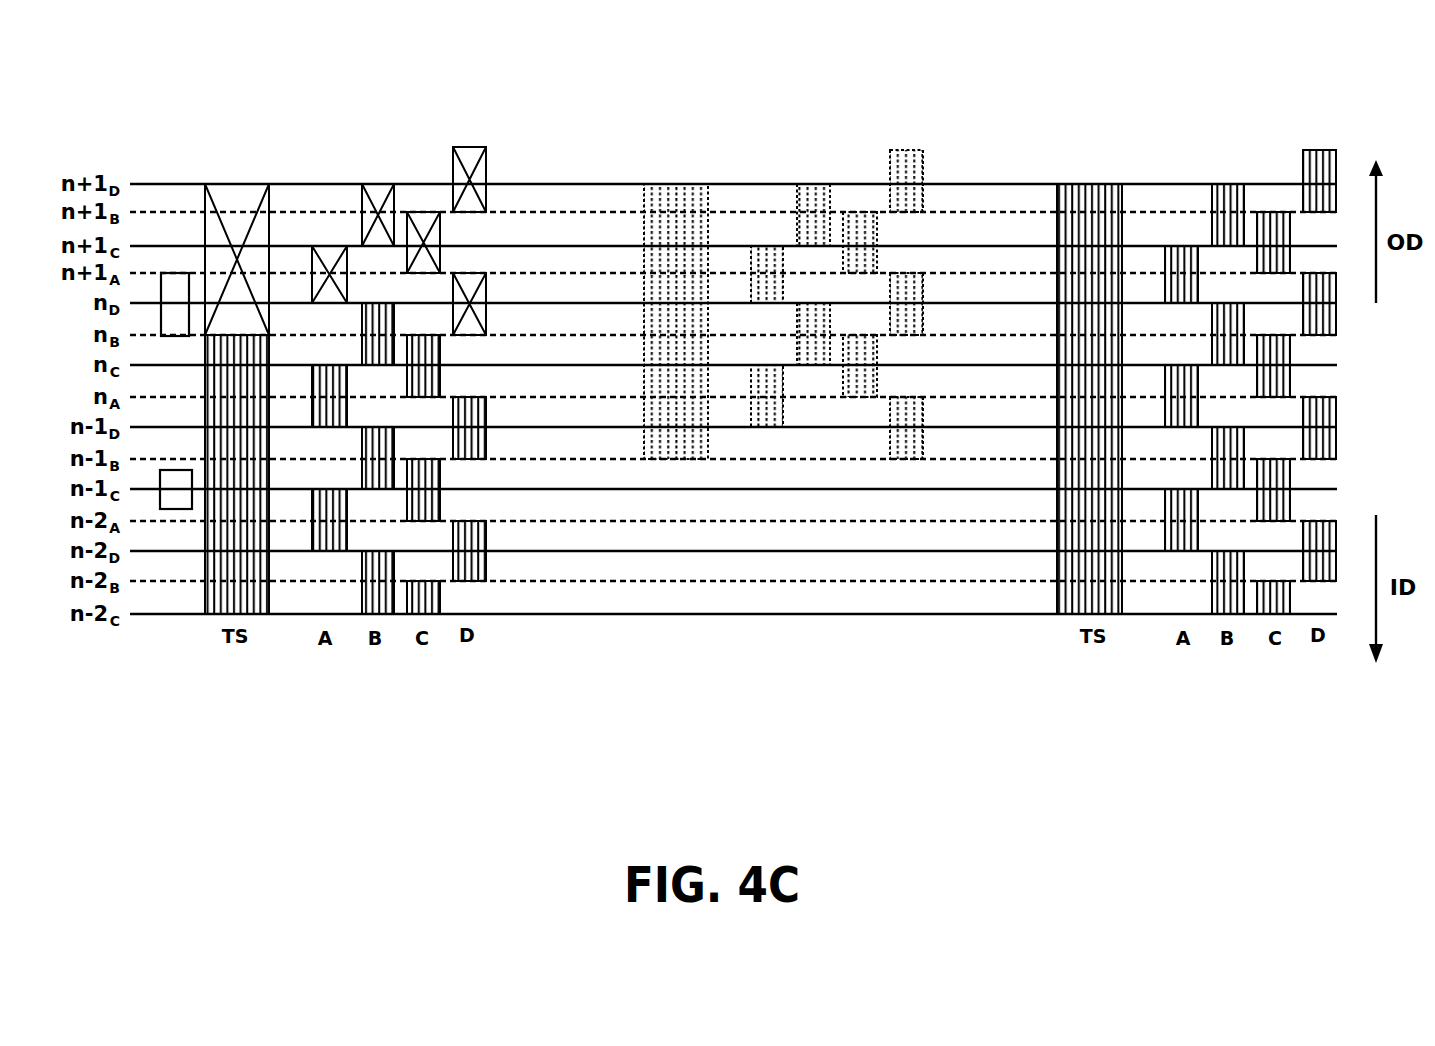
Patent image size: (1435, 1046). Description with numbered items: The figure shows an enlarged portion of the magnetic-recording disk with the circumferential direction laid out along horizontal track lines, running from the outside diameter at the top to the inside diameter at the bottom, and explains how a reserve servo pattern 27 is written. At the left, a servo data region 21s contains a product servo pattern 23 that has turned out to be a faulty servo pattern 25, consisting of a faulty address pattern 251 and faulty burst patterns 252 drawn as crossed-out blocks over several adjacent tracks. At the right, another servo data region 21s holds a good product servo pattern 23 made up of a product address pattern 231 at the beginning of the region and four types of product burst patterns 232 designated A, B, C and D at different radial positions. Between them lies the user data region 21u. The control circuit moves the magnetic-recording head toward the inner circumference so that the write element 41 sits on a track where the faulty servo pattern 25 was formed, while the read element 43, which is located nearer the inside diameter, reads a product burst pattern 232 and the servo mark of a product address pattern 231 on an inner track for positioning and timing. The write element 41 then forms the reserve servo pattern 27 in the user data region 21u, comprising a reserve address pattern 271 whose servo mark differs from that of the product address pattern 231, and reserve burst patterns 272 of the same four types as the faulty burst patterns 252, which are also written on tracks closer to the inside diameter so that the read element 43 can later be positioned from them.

The faulty servo pattern 25 is at (345, 319).
The faulty address pattern 251 is at (232, 184).
The faulty burst patterns 252 is at (467, 147).
The reserve servo pattern 27 is at (771, 249).
The reserve address pattern 271 is at (680, 184).
The reserve burst patterns 272 is at (912, 150).
The product servo pattern 23 is at (1170, 337).
The product address pattern 231 is at (1083, 184).
The product burst patterns 232 is at (1225, 184).
The write element 41 is at (175, 273).
The read element 43 is at (176, 509).
The servo data region 21s is at (200, 640).
The user data region 21u is at (513, 640).